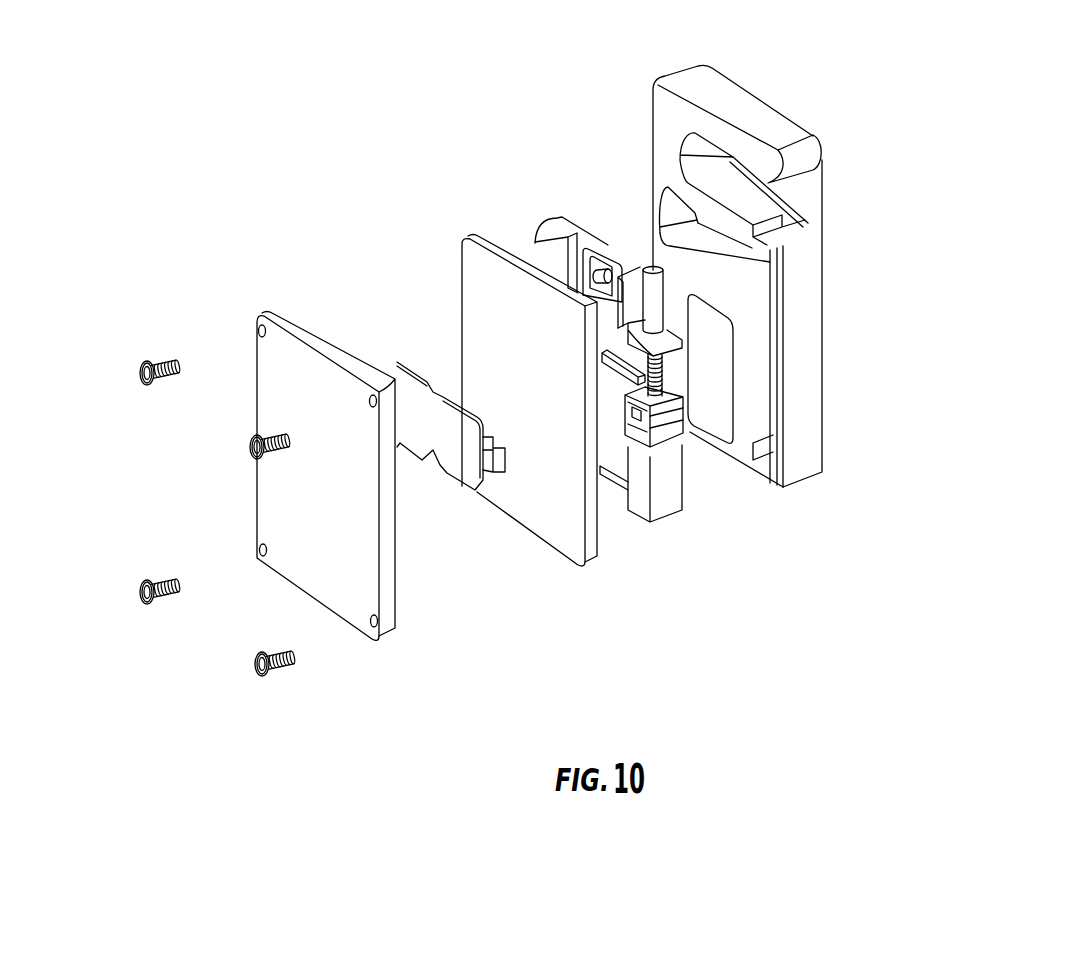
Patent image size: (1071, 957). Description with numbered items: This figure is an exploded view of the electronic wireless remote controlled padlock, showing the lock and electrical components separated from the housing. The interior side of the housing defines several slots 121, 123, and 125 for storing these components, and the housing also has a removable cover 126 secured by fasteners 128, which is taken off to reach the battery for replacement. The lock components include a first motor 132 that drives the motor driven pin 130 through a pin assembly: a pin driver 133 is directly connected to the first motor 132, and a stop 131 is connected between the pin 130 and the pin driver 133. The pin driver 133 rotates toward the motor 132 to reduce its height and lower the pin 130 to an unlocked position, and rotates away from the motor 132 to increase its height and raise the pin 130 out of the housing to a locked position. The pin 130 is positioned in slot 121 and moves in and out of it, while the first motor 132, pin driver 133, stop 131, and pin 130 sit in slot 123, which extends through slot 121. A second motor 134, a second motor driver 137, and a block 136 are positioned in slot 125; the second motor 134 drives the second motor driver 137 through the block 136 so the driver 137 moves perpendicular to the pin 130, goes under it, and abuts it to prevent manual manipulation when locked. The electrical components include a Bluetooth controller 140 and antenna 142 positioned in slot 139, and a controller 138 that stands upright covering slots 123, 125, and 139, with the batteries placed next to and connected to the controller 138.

The slot 121 is at (812, 222).
The slot 123 is at (773, 488).
The slot 125 is at (653, 185).
The cover 126 is at (255, 340).
The fasteners 128 is at (125, 377).
The motor driven pin 130 is at (710, 450).
The stop 131 is at (658, 315).
The first motor 132 is at (645, 508).
The pin driver 133 is at (650, 398).
The second motor 134 is at (543, 206).
The block 136 is at (625, 305).
The second motor driver 137 is at (607, 264).
The controller 138 is at (455, 278).
The slot 139 is at (822, 412).
The Bluetooth controller 140 is at (618, 469).
The antenna 142 is at (391, 349).